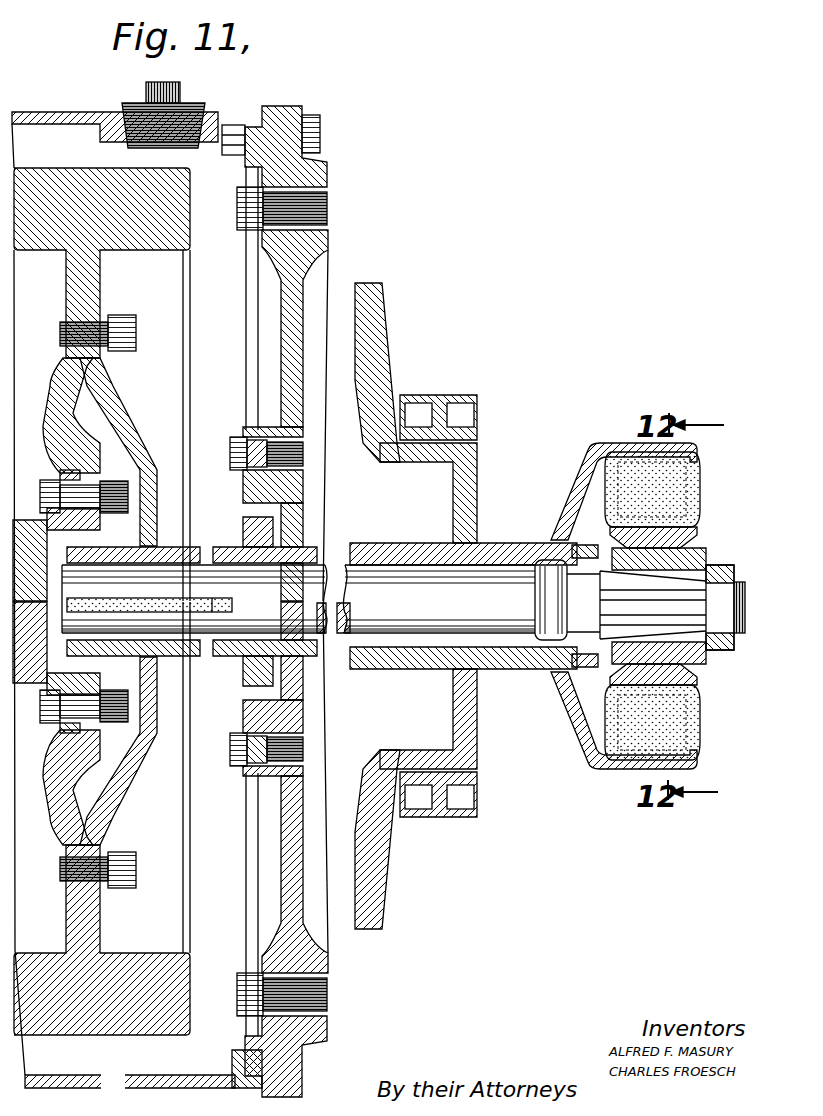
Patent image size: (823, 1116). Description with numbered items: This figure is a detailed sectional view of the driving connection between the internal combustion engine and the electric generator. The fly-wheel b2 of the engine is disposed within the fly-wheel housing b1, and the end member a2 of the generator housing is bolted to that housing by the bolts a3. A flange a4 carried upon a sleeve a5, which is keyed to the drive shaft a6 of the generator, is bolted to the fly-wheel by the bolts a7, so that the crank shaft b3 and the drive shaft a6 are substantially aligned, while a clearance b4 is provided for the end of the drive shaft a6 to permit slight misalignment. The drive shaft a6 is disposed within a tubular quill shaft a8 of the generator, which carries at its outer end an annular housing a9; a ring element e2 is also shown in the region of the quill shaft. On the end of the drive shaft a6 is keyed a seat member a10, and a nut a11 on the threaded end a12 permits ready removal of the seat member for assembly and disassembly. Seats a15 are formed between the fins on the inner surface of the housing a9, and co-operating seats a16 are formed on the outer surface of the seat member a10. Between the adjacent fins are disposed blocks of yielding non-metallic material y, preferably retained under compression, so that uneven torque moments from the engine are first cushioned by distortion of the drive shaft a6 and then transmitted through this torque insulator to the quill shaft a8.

The fly-wheel housing b1 is at (69, 118).
The fly-wheel b2 is at (84, 187).
The crank shaft b3 is at (30, 522).
The clearance b4 is at (100, 541).
The end member a2 is at (324, 183).
The bolts a3 is at (322, 129).
The flange a4 is at (138, 418).
The sleeve a5 is at (162, 546).
The drive shaft a6 is at (315, 571).
The bolts a7 is at (136, 331).
The tubular quill shaft a8 is at (482, 553).
The housing a9 is at (591, 450).
The seat member a10 is at (699, 550).
The nut a11 is at (734, 564).
The threaded end a12 is at (746, 598).
The seats a15 is at (692, 752).
The co-operating seats a16 is at (674, 673).
The release fork ring e2 is at (424, 395).
The blocks of yielding non-metallic material y is at (685, 481).